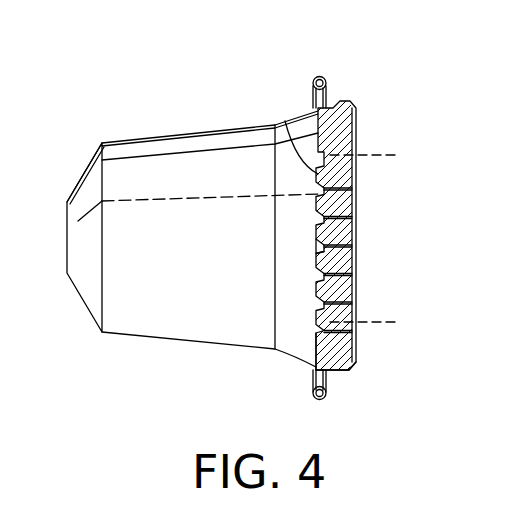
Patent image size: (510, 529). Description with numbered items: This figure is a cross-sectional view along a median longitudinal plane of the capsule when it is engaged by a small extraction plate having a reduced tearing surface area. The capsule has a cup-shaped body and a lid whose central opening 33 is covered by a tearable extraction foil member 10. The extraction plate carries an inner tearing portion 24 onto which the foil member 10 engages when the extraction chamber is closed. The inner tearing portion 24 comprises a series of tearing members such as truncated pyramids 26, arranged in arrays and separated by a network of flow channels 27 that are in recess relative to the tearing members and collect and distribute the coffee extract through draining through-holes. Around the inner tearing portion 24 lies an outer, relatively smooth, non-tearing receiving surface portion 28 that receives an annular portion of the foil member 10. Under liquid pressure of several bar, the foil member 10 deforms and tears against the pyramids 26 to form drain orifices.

The tearable extraction foil member 10 is at (313, 196).
The inner tearing portion 24 is at (350, 88).
The truncated pyramids 26 is at (285, 121).
The flow channels 27 is at (313, 250).
The non-tearing receiving surface portion 28 is at (320, 348).
The central opening 33 is at (316, 345).